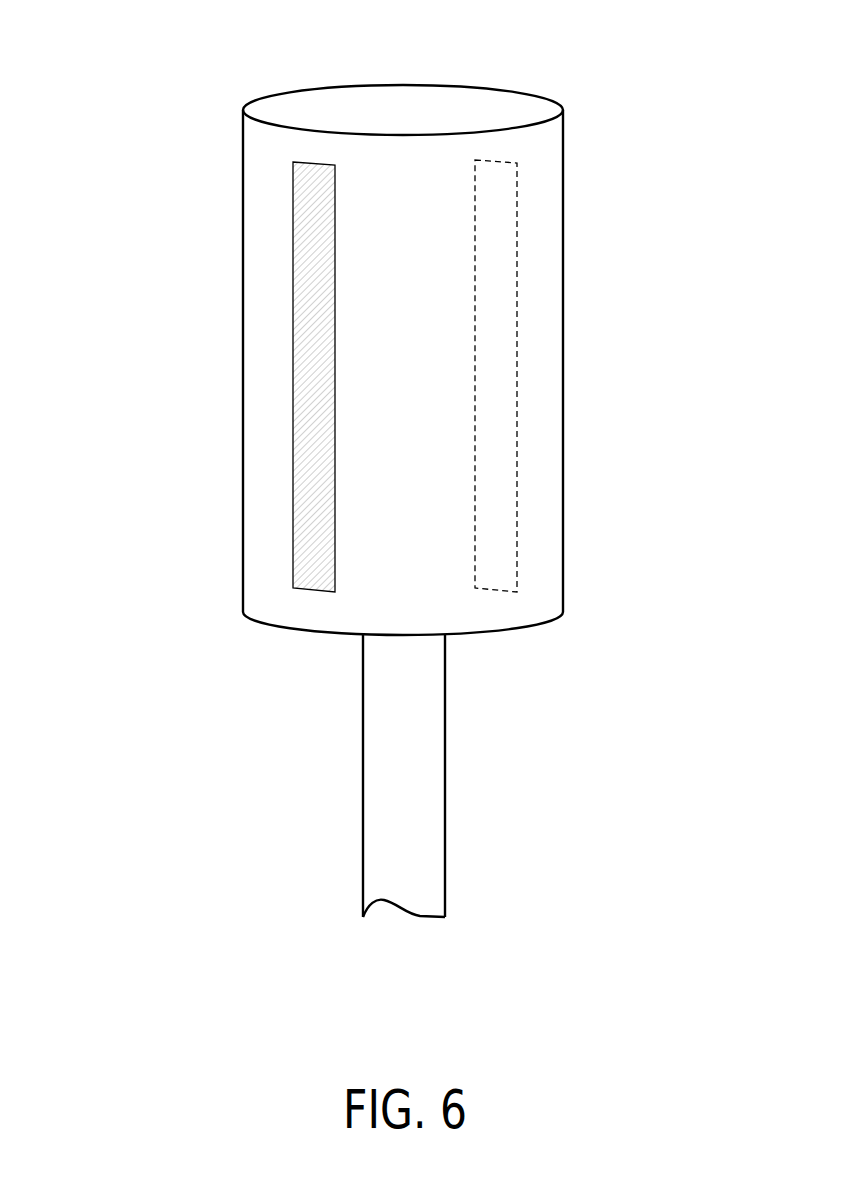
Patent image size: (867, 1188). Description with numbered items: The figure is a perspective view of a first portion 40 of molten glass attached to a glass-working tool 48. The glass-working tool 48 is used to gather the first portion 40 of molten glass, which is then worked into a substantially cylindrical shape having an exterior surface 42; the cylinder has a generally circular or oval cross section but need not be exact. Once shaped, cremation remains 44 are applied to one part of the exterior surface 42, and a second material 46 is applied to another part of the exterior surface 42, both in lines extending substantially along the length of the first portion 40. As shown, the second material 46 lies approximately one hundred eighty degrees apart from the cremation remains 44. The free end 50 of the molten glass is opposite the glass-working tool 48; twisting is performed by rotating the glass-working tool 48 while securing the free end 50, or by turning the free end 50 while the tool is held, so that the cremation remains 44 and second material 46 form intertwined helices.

The first portion of molten glass 40 is at (166, 73).
The exterior surface 42 is at (416, 310).
The cremation remains 44 is at (303, 195).
The second material 46 is at (503, 212).
The glass-working tool 48 is at (403, 755).
The free end 50 is at (433, 98).